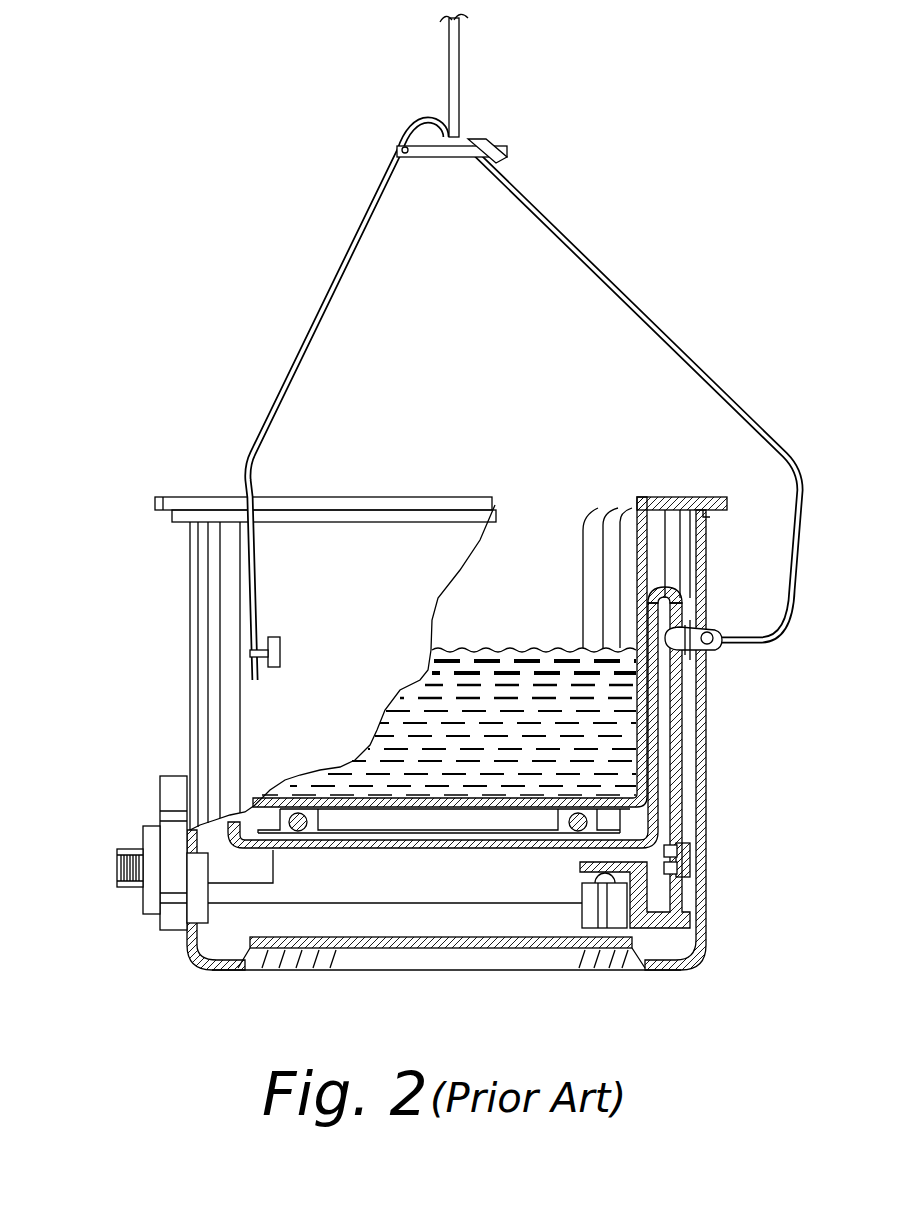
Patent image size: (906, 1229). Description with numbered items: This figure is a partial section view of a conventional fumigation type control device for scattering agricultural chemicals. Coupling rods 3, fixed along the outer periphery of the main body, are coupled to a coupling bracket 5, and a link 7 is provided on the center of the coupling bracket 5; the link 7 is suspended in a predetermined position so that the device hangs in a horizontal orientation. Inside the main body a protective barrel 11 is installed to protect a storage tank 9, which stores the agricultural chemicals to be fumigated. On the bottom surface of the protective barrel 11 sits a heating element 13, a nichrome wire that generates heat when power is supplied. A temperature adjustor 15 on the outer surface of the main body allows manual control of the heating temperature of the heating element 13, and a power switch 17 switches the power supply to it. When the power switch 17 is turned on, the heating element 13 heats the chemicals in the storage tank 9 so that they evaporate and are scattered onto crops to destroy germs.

The coupling rods 3 is at (328, 284).
The coupling bracket 5 is at (500, 148).
The link 7 is at (448, 62).
The storage tank 9 is at (637, 540).
The protective barrel 11 is at (660, 731).
The heating element 13 is at (297, 850).
The temperature adjustor 15 is at (116, 868).
The power switch 17 is at (596, 905).